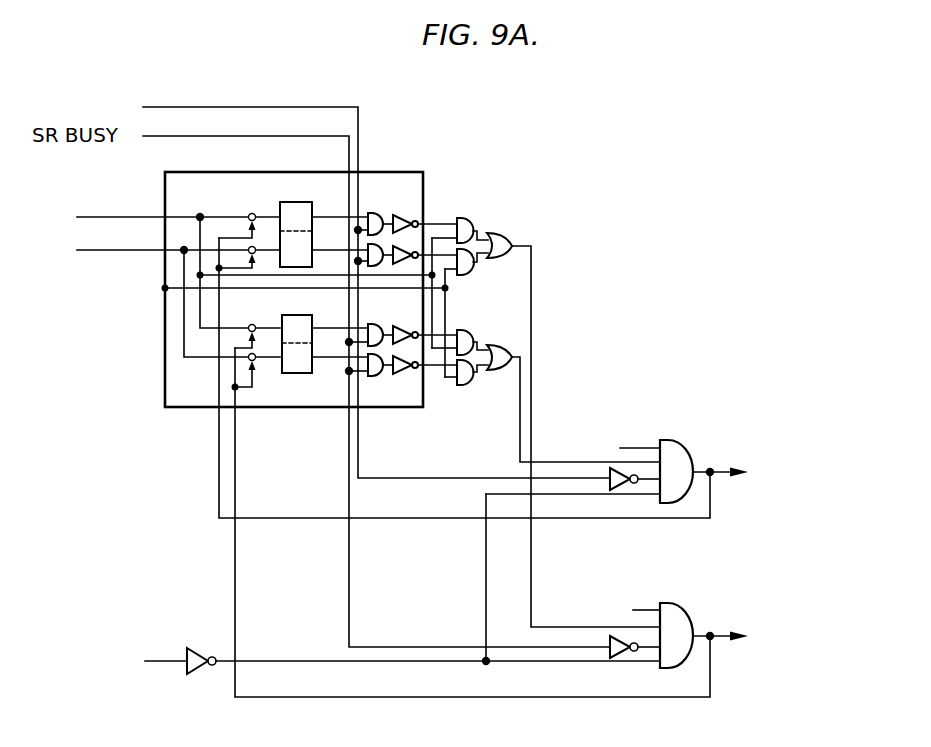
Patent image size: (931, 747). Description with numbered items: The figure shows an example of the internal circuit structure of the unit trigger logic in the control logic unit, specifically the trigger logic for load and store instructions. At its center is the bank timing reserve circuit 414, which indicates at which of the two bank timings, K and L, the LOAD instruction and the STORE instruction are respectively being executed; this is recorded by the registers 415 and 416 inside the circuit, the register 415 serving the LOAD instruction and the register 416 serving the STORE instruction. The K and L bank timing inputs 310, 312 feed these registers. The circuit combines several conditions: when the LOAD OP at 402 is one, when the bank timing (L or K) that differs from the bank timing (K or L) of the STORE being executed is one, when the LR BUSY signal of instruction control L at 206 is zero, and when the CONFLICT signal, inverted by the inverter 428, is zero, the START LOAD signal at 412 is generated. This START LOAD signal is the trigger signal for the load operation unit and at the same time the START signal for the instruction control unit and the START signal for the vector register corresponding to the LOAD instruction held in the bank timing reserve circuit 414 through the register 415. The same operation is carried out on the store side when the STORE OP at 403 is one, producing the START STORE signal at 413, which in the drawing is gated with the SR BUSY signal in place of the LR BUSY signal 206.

The LR BUSY signal of instruction control L 206 is at (163, 107).
The K input line 310 is at (100, 217).
The L input line 312 is at (95, 250).
The bank timing reserve circuit 414 is at (410, 172).
The register 415 is at (278, 204).
The register 416 is at (281, 321).
The LOAD OP 402 is at (638, 447).
The STORE OP 403 is at (645, 611).
The START LOAD signal 412 is at (738, 466).
The START STORE output signal 413 is at (737, 630).
The conflict inverter 428 is at (200, 648).